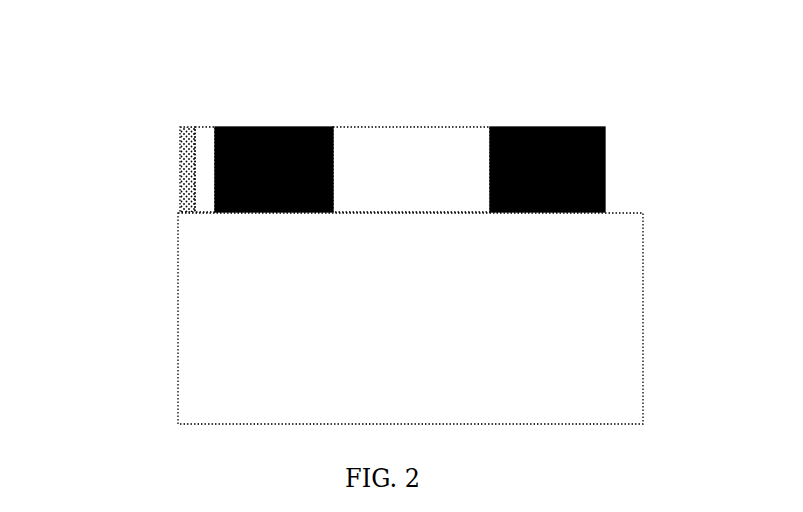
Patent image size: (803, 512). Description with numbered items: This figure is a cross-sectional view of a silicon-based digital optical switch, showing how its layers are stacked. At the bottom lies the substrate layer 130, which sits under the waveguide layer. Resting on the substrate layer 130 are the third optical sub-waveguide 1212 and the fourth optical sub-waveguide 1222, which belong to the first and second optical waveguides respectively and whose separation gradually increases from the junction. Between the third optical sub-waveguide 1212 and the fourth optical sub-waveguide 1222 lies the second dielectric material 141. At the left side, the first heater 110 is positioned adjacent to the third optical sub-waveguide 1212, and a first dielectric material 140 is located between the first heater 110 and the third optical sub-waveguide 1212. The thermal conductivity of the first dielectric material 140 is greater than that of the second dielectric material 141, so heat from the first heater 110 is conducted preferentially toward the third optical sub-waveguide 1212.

The first heater 110 is at (182, 170).
The substrate layer 130 is at (178, 318).
The first dielectric material 140 is at (207, 127).
The second dielectric material 141 is at (440, 127).
The third optical sub-waveguide 1212 is at (275, 127).
The fourth optical sub-waveguide 1222 is at (605, 170).